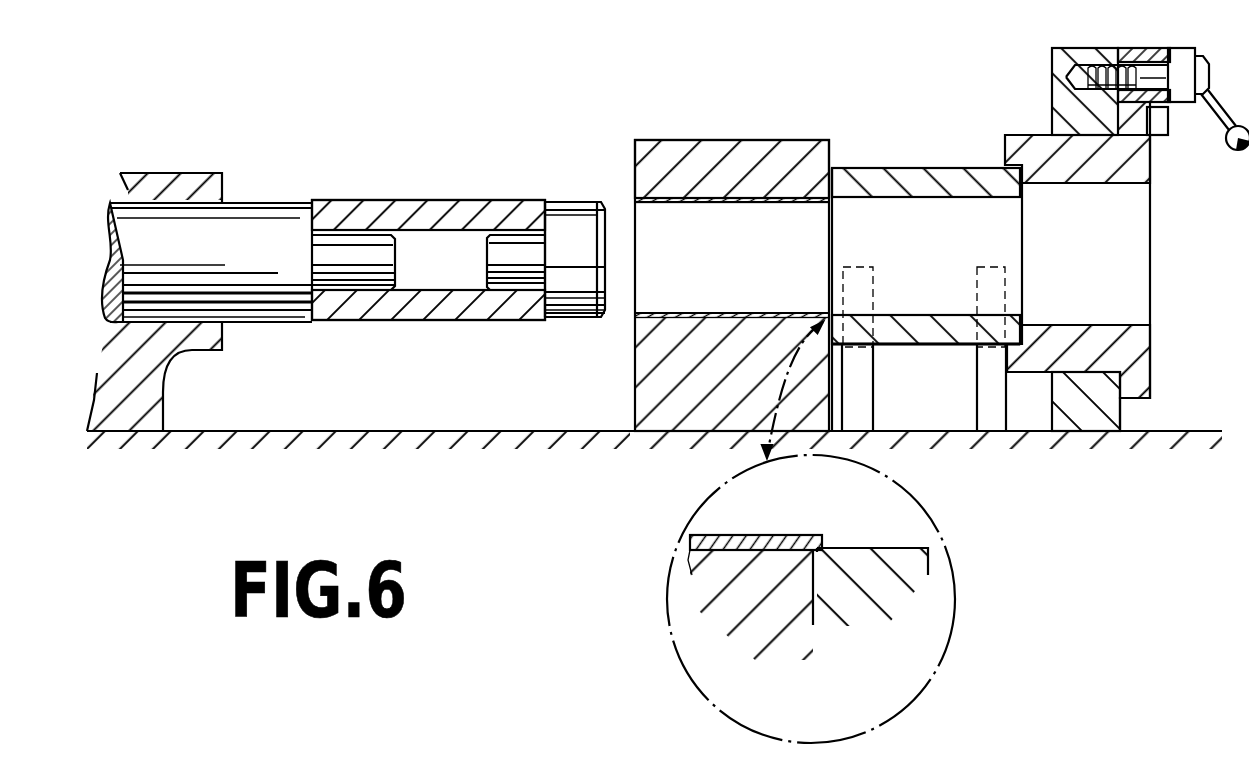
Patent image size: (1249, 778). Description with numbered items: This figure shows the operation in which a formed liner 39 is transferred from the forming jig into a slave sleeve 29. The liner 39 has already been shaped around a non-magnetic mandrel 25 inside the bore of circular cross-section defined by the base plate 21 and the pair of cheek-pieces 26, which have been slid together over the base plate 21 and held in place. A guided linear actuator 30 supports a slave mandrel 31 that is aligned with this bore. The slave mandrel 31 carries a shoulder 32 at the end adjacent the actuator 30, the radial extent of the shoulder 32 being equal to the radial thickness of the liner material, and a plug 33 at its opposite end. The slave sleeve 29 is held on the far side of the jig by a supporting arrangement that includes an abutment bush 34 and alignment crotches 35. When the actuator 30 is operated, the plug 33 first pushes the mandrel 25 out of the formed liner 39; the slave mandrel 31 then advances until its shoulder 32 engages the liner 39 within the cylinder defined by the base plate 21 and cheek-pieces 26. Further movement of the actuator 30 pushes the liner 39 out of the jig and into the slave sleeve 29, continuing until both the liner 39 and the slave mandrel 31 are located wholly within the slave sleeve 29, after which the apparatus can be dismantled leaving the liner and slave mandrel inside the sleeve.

The base plate 21 is at (665, 367).
The mandrel 25 is at (633, 300).
The cheek-pieces 26 is at (715, 160).
The slave sleeve 29 is at (982, 172).
The guided linear actuator 30 is at (272, 226).
The slave mandrel 31 is at (468, 208).
The shoulder 32 is at (323, 199).
The plug 33 is at (573, 208).
The abutment bush 34 is at (1130, 350).
The alignment crotches 35 is at (980, 398).
The liner 39 is at (718, 537).